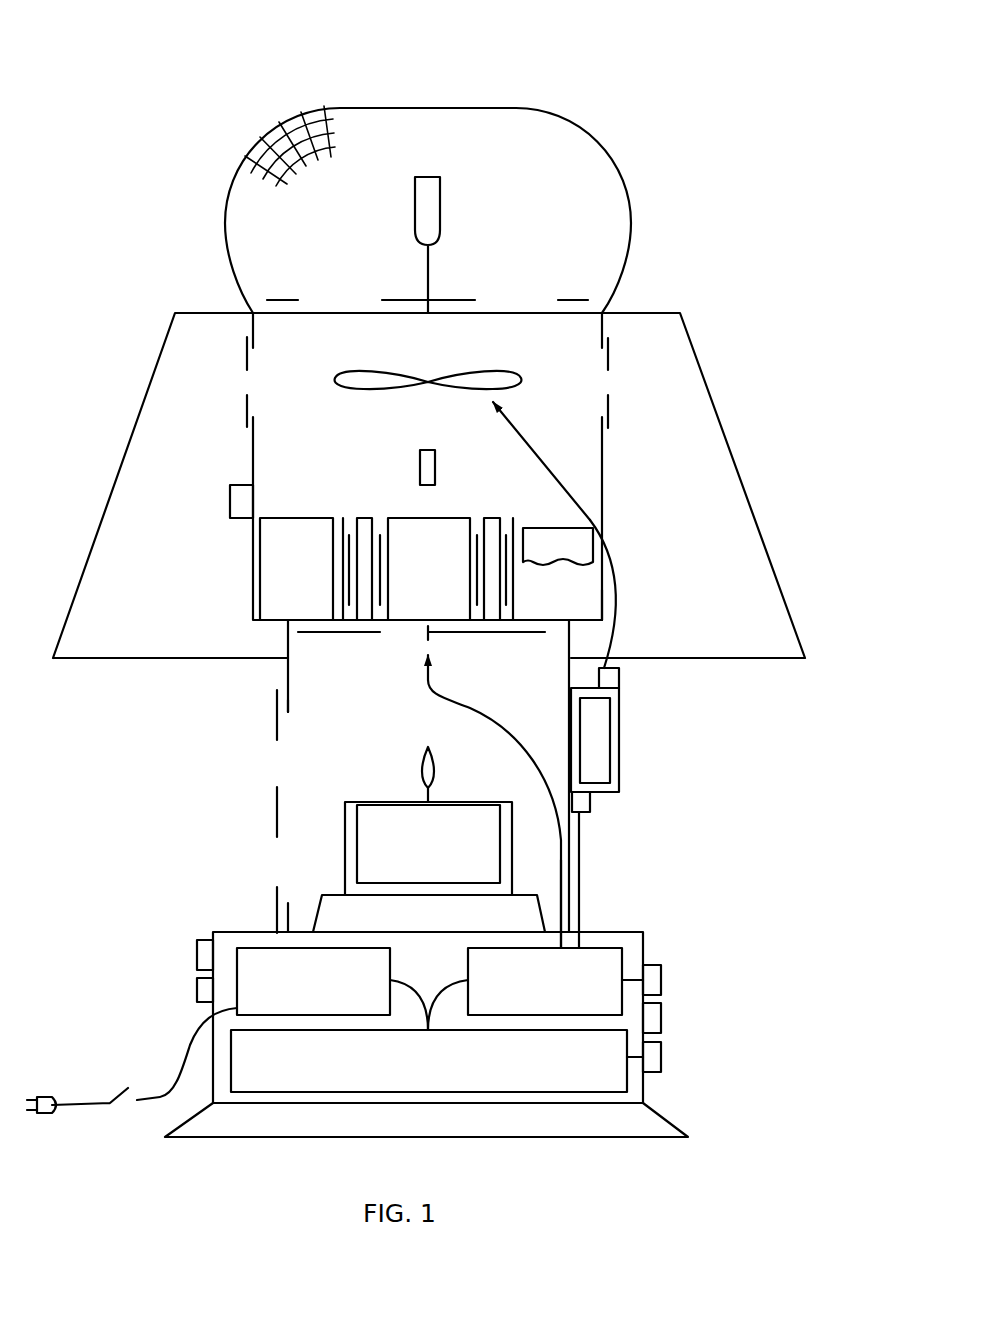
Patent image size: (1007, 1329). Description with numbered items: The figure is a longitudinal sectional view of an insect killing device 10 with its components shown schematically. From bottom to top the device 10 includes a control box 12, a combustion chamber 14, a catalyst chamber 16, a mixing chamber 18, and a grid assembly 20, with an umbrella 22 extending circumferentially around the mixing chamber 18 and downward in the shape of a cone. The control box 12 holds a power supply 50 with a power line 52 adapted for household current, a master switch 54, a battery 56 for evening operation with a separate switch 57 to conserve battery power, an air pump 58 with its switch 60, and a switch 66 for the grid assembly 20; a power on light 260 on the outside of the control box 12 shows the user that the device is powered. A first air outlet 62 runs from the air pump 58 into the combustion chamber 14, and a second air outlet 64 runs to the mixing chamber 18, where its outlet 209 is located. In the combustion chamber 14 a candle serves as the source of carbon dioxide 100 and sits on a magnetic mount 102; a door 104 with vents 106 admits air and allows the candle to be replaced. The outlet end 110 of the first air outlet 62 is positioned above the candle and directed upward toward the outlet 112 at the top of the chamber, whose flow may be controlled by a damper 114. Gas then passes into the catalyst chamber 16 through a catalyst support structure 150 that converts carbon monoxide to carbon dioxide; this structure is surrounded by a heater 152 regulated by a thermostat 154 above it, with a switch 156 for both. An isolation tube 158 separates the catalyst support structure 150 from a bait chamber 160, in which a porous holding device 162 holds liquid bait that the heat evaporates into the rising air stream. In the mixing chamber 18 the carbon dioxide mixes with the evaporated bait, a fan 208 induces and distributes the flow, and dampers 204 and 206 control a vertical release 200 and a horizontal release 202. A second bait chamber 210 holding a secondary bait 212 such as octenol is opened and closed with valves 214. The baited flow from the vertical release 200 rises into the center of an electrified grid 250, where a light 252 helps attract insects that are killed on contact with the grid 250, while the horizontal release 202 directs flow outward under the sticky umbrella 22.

The insect killing device 10 is at (136, 98).
The control box 12 is at (130, 1045).
The combustion chamber 14 is at (150, 800).
The catalyst chamber 16 is at (208, 604).
The mixing chamber 18 is at (195, 415).
The grid assembly 20 is at (188, 212).
The umbrella 22 is at (160, 335).
The power supply 50 is at (329, 997).
The power line 52 is at (158, 1100).
The switch 54 is at (118, 1110).
The battery 56 is at (444, 1071).
The switch 57 is at (661, 1058).
The air pump 58 is at (561, 997).
The switch 60 is at (661, 978).
The first air outlet 62 is at (581, 864).
The second air outlet 64 is at (565, 903).
The switch 66 is at (197, 955).
The source of carbon dioxide 100 is at (451, 862).
The mount 102 is at (451, 929).
The door 104 is at (286, 720).
The vents 106 is at (280, 700).
The outlet end 110 is at (425, 670).
The outlet 112 is at (385, 640).
The damper 114 is at (505, 640).
The catalyst support structure 150 is at (451, 564).
The heater 152 is at (477, 585).
The thermostat 154 is at (435, 468).
The switch 156 is at (230, 500).
The isolation tube 158 is at (365, 518).
The bait chamber 160 is at (597, 606).
The holding device 162 is at (268, 568).
The vertical release 200 is at (490, 312).
The horizontal release 202 is at (610, 372).
The damper 204 is at (455, 300).
The damper 206 is at (608, 420).
The fan 208 is at (352, 393).
The outlet 209 is at (500, 410).
The second bait chamber 210 is at (620, 726).
The secondary bait 212 is at (610, 768).
The valves 214 is at (620, 688).
The electrified grid 250 is at (268, 140).
The light 252 is at (440, 205).
The power on light 260 is at (197, 990).